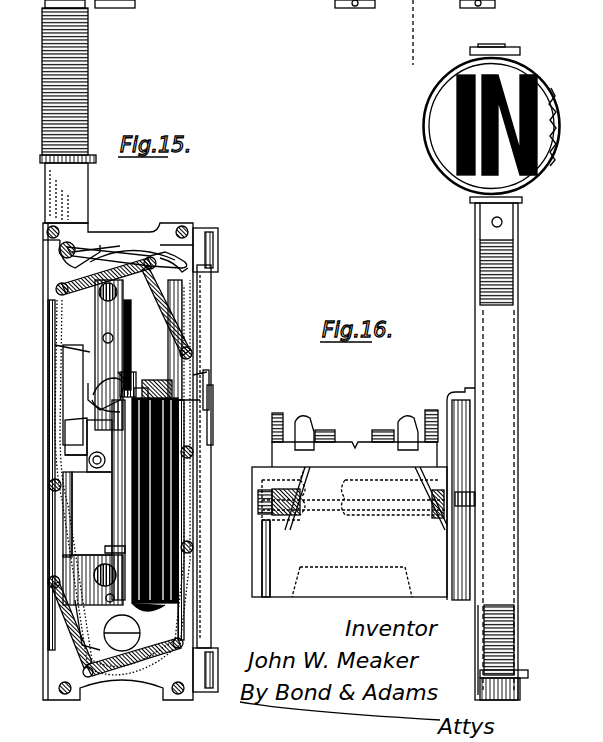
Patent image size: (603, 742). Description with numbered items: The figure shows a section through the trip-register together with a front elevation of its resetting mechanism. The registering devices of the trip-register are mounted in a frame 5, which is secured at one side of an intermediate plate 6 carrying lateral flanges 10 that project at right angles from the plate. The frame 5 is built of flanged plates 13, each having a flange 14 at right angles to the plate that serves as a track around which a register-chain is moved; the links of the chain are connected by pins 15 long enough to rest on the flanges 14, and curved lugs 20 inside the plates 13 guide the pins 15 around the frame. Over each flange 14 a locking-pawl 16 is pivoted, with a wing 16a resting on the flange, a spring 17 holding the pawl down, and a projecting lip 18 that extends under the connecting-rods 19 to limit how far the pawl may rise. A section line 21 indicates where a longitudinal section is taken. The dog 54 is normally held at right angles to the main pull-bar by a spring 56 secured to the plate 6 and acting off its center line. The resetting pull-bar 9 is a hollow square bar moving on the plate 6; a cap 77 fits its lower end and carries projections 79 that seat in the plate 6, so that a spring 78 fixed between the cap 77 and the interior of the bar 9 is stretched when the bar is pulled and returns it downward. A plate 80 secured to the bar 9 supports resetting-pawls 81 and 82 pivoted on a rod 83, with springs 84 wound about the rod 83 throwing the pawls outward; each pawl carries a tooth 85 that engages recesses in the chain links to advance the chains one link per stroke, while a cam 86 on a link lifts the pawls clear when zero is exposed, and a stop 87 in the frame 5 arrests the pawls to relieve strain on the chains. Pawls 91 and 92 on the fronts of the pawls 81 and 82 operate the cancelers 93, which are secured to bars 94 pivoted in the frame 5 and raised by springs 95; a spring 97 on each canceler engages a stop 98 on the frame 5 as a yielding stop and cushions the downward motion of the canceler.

In FIG. 15, the frame 5 is at (175, 255).
In FIG. 15, the intermediate plate 6 is at (106, 326).
In FIG. 15, the resetting pull-bar 9 is at (83, 203).
In FIG. 16, the resetting pull-bar 9 is at (478, 228).
In FIG. 15, the lateral flanges 10 is at (205, 640).
In FIG. 15, the flanged plates 13 is at (43, 236).
In FIG. 15, the flange 14 is at (74, 253).
In FIG. 16, the flange 14 is at (445, 0).
In FIG. 15, the pins 15 is at (20, 606).
In FIG. 15, the locking-pawls 16 is at (112, 248).
In FIG. 15, the wings 16a is at (122, 260).
In FIG. 15, the spring 17 is at (88, 252).
In FIG. 15, the projecting lip 18 is at (218, 255).
In FIG. 15, the connecting-rods 19 is at (46, 228).
In FIG. 16, the connecting-rods 19 is at (355, 6).
In FIG. 15, the curved lugs 20 is at (198, 668).
In FIG. 16, the section line 21 is at (421, 32).
In FIG. 15, the dog 54 is at (152, 385).
In FIG. 15, the spring 56 is at (107, 544).
In FIG. 16, the cap 77 is at (522, 692).
In FIG. 15, the spring 78 is at (80, 648).
In FIG. 16, the spring 78 is at (520, 640).
In FIG. 16, the projections 79 is at (526, 672).
In FIG. 15, the plate 80 is at (92, 513).
In FIG. 16, the plate 80 is at (349, 519).
In FIG. 15, the resetting-pawl 81 is at (76, 436).
In FIG. 16, the resetting-pawl 81 is at (316, 492).
In FIG. 16, the resetting-pawl 82 is at (450, 494).
In FIG. 15, the rod 83 is at (99, 446).
In FIG. 16, the rod 83 is at (258, 497).
In FIG. 16, the springs 84 is at (272, 510).
In FIG. 15, the tooth 85 is at (79, 370).
In FIG. 16, the tooth 85 is at (354, 428).
In FIG. 15, the cam 86 is at (72, 455).
In FIG. 15, the stop 87 is at (70, 352).
In FIG. 15, the pawl 91 is at (90, 383).
In FIG. 16, the pawl 91 is at (280, 415).
In FIG. 15, the pawl 92 is at (95, 400).
In FIG. 16, the pawl 92 is at (312, 428).
In FIG. 15, the cancelers 93 is at (210, 385).
In FIG. 15, the bars 94 is at (142, 396).
In FIG. 15, the springs 95 is at (200, 400).
In FIG. 15, the springs 97 is at (212, 432).
In FIG. 15, the stop 98 is at (208, 373).